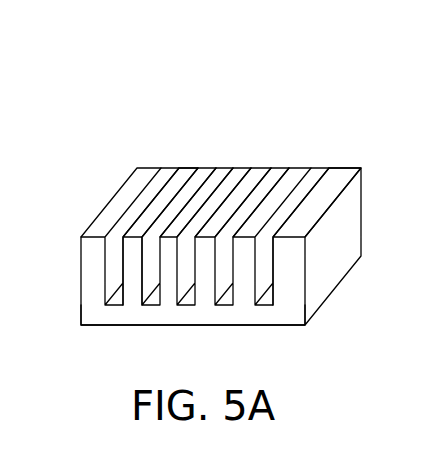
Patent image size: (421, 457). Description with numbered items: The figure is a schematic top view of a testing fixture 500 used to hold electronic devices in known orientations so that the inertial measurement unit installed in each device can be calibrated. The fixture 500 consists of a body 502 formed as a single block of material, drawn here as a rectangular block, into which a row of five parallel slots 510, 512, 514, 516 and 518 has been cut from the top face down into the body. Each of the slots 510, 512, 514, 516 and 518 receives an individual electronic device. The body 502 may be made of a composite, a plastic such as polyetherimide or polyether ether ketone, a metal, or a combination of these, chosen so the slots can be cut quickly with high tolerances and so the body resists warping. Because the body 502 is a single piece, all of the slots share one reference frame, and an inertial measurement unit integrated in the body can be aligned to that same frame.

The fixture 500 is at (206, 90).
The body 502 is at (100, 226).
The slot 510 is at (158, 195).
The slot 512 is at (194, 189).
The slot 514 is at (188, 280).
The slot 516 is at (228, 282).
The slot 518 is at (311, 191).